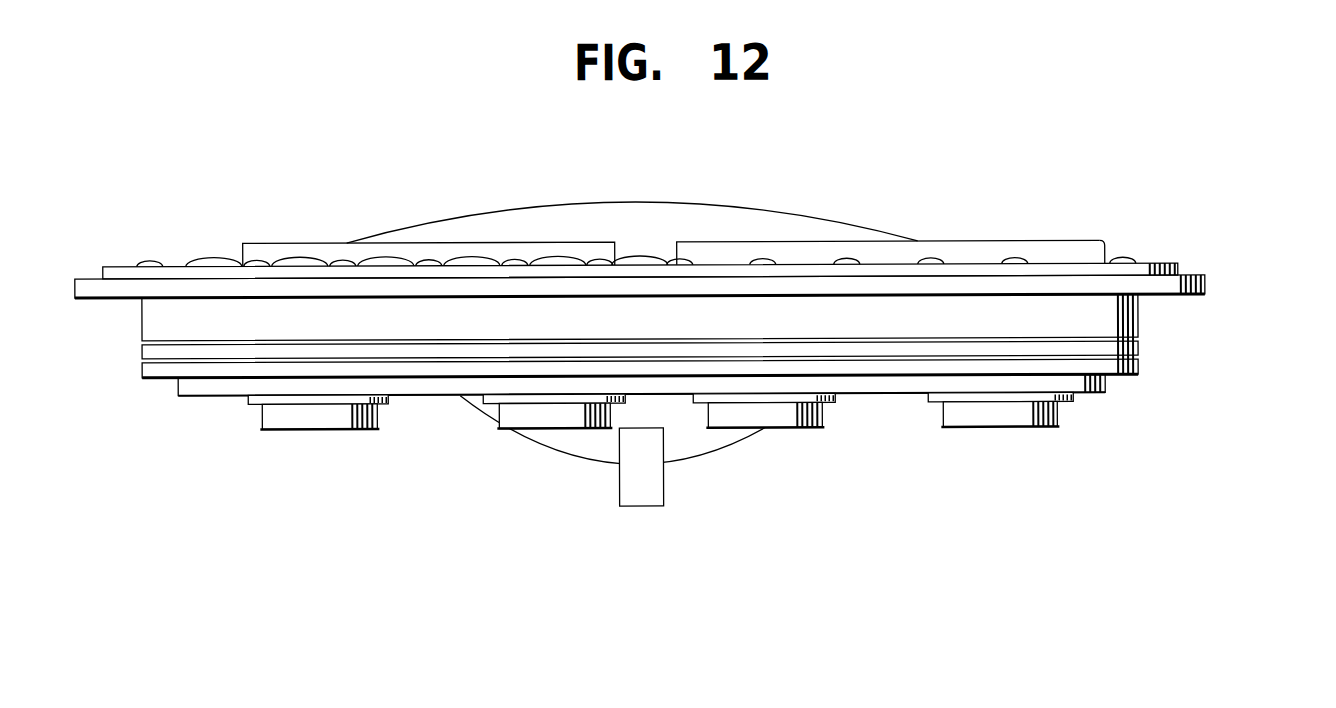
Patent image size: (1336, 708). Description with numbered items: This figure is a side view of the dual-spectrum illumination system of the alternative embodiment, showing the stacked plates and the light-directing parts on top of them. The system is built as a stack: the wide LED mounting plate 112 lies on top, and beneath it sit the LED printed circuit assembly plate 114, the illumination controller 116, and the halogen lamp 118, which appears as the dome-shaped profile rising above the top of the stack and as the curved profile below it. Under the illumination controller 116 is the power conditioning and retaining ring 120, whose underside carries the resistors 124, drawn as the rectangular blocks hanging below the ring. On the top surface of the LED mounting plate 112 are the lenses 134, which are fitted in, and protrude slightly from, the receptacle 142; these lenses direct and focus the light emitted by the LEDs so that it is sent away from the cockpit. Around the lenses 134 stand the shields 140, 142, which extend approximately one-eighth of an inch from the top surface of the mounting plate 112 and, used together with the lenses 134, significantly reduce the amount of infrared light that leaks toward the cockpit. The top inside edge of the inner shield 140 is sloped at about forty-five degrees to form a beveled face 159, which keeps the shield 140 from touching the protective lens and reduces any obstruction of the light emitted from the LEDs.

The LED mounting plate 112 is at (1205, 282).
The LED printed circuit assembly plate 114 is at (1138, 313).
The illumination controller 116 is at (1138, 345).
The halogen lamp 118 is at (632, 203).
The power conditioning and retaining ring 120 is at (1105, 385).
The resistors 124 is at (997, 428).
The lenses 134 is at (203, 258).
The inner shield 140 is at (992, 243).
The shield (receptacle) 142 is at (297, 243).
The beveled face 159 is at (1105, 242).